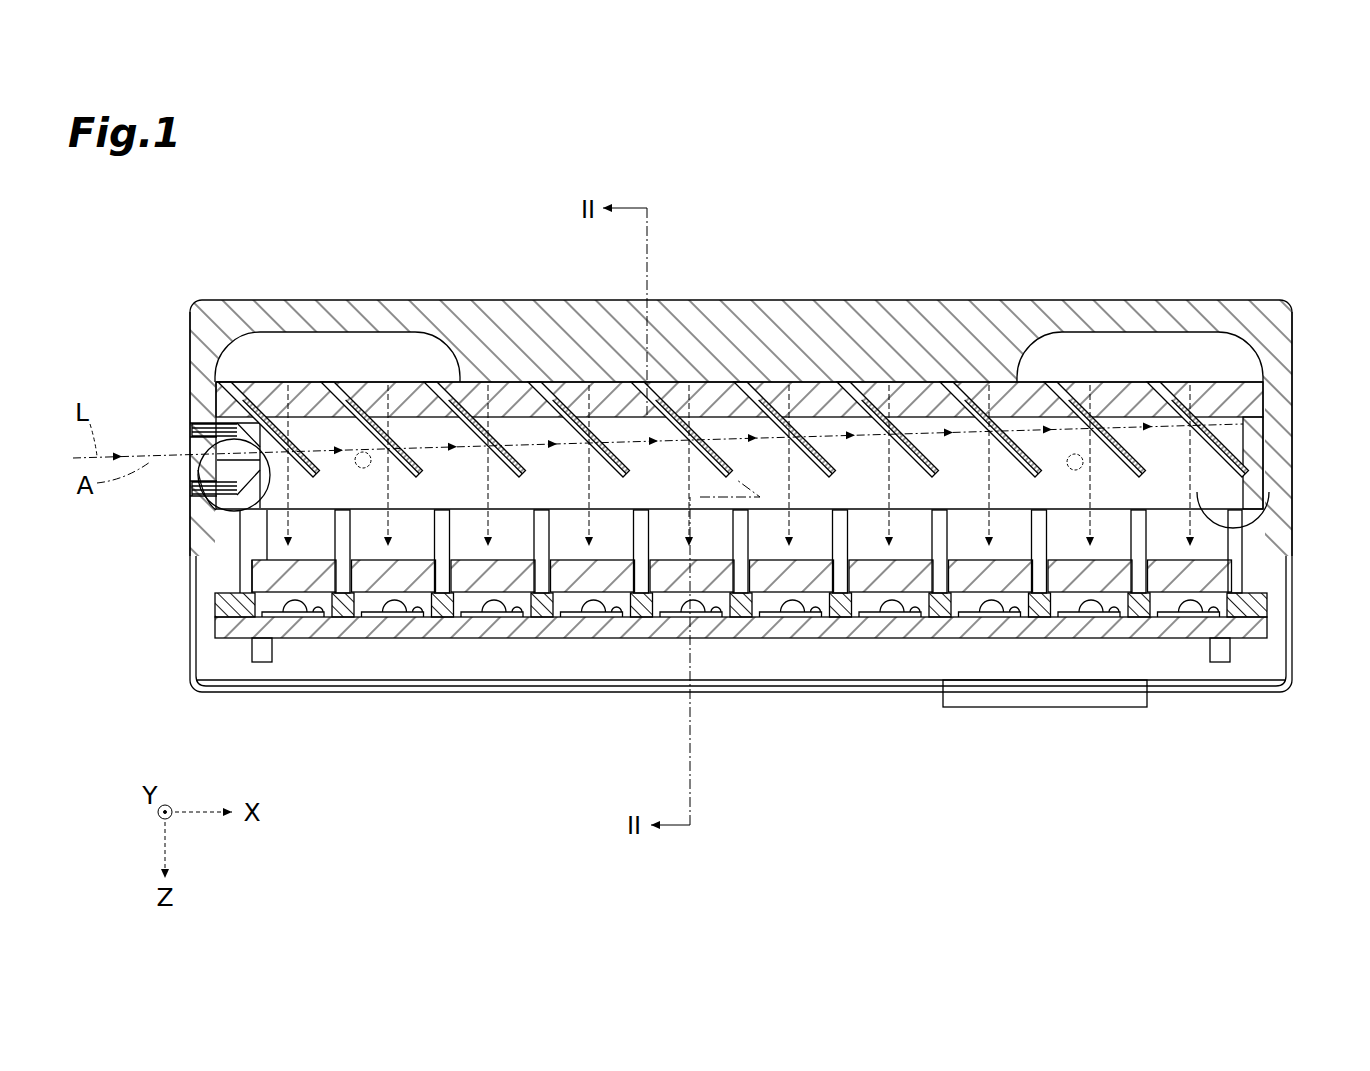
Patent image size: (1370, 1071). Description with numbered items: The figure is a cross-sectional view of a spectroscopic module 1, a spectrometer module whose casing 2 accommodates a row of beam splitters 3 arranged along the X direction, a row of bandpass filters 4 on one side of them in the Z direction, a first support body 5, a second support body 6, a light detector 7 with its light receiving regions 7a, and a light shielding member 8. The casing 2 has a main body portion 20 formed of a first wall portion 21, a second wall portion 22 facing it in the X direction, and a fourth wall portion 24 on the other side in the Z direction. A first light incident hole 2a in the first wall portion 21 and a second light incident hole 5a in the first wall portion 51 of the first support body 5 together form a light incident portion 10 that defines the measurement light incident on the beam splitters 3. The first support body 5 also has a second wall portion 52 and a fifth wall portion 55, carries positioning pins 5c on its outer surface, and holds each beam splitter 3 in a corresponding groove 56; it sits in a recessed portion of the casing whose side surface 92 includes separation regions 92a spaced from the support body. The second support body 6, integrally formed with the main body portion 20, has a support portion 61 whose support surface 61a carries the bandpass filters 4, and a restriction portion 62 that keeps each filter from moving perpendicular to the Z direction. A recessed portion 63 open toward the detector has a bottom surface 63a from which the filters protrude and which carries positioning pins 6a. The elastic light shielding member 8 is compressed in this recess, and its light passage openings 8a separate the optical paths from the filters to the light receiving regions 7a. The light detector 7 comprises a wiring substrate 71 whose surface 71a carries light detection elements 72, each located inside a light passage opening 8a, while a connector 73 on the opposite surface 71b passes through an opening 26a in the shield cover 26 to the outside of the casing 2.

The spectroscopic module 1 is at (1244, 245).
The casing 2 is at (532, 300).
The first light incident hole 2a is at (188, 480).
The beam splitter 3 is at (312, 460).
The bandpass filter 4 is at (295, 605).
The first support body 5 is at (312, 380).
The second light incident hole 5a is at (217, 422).
The positioning pin 5c is at (360, 470).
The second support body 6 is at (1258, 548).
The positioning pin 6a is at (262, 662).
The light detector 7 is at (752, 640).
The light receiving region 7a is at (420, 614).
The light shielding member 8 is at (1250, 640).
The light passage opening 8a is at (318, 610).
The light incident portion 10 is at (178, 442).
The main body portion 20 is at (1005, 375).
The first wall portion 21 is at (200, 352).
The second wall portion 22 is at (1284, 396).
The fourth wall portion 24 is at (738, 345).
The shield cover 26 is at (548, 692).
The opening 26a is at (1133, 707).
The first wall portion 51 is at (205, 500).
The second wall portion 52 is at (1262, 478).
The fifth wall portion 55 is at (830, 405).
The groove 56 is at (305, 378).
The support portion 61 is at (247, 538).
The support surface 61a is at (1240, 575).
The restriction portion 62 is at (250, 575).
The recessed portion 63 is at (235, 620).
The bottom surface 63a is at (1268, 602).
The wiring substrate 71 is at (836, 640).
The surface 71a is at (1268, 628).
The surface 71b is at (1252, 645).
The light detection element 72 is at (265, 630).
The connector 73 is at (1033, 700).
The side surface 92 is at (915, 395).
The separation region 92a is at (420, 335).